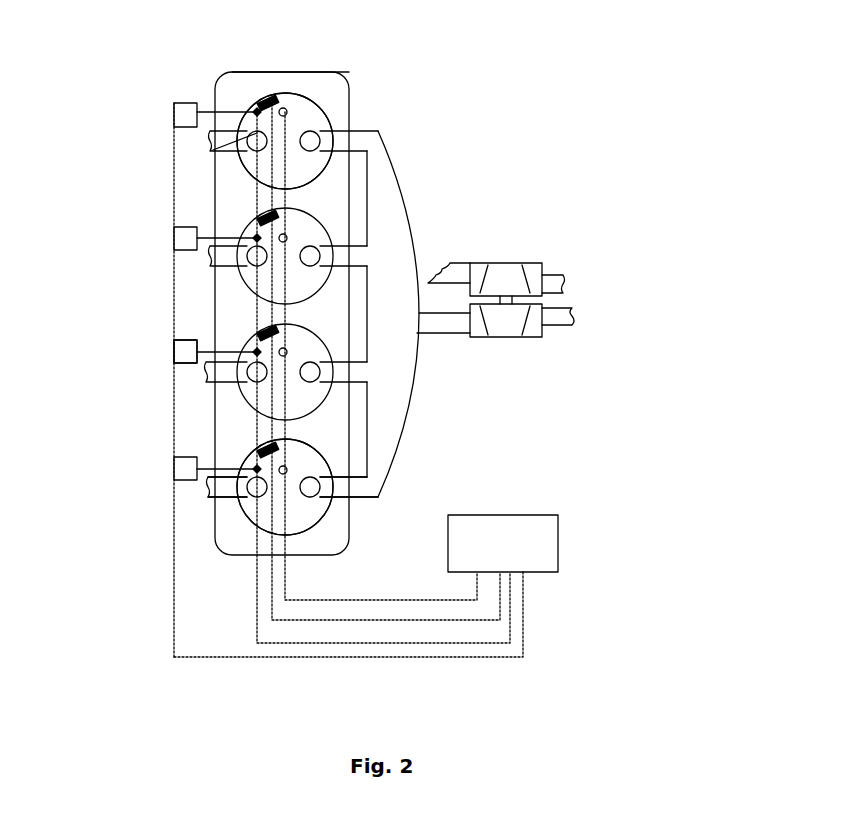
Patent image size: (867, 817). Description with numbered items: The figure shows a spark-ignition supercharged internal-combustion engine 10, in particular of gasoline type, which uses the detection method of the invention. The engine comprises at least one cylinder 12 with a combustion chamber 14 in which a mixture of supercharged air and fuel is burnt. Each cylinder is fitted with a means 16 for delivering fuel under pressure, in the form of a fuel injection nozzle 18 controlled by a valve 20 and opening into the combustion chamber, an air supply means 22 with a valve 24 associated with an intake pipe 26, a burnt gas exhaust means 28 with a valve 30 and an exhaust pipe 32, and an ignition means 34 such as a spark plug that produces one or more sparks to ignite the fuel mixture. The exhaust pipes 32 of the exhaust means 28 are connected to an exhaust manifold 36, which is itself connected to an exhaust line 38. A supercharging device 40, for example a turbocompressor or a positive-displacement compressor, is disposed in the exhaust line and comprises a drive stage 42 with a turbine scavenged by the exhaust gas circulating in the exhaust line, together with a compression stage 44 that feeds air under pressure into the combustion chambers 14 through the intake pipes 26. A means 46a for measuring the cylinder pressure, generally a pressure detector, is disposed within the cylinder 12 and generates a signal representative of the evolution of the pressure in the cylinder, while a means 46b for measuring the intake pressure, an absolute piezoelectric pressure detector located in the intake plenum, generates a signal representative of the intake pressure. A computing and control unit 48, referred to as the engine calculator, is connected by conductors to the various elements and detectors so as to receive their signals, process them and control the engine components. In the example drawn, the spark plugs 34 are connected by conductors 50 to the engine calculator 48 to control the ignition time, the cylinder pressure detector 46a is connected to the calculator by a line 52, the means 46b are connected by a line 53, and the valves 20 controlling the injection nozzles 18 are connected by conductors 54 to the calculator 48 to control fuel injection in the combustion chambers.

The spark-ignition supercharged internal-combustion engine 10 is at (458, 188).
The cylinder 12 is at (318, 106).
The combustion chamber 14 is at (310, 176).
The means for delivering fuel under pressure 16 is at (158, 228).
The fuel injection nozzle 18 is at (247, 97).
The valve 20 is at (187, 353).
The air supply means 22 is at (231, 504).
The valve 24 is at (268, 377).
The intake pipe 26 is at (228, 268).
The burnt gas exhaust means 28 is at (343, 504).
The valve 30 is at (308, 266).
The exhaust pipe 32 is at (332, 388).
The ignition means 34 is at (290, 108).
The exhaust manifold 36 is at (400, 329).
The exhaust line 38 is at (590, 316).
The supercharging device 40 is at (552, 270).
The drive stage 42 is at (506, 320).
The compression stage 44 is at (518, 290).
The means for measuring the cylinder pressure 46a is at (262, 98).
The means for measuring the intake pressure 46b is at (213, 150).
The computing and control unit 48 is at (515, 554).
The conductors 50 is at (413, 600).
The line 52 is at (340, 620).
The line 53 is at (395, 657).
The conductors 54 is at (172, 597).